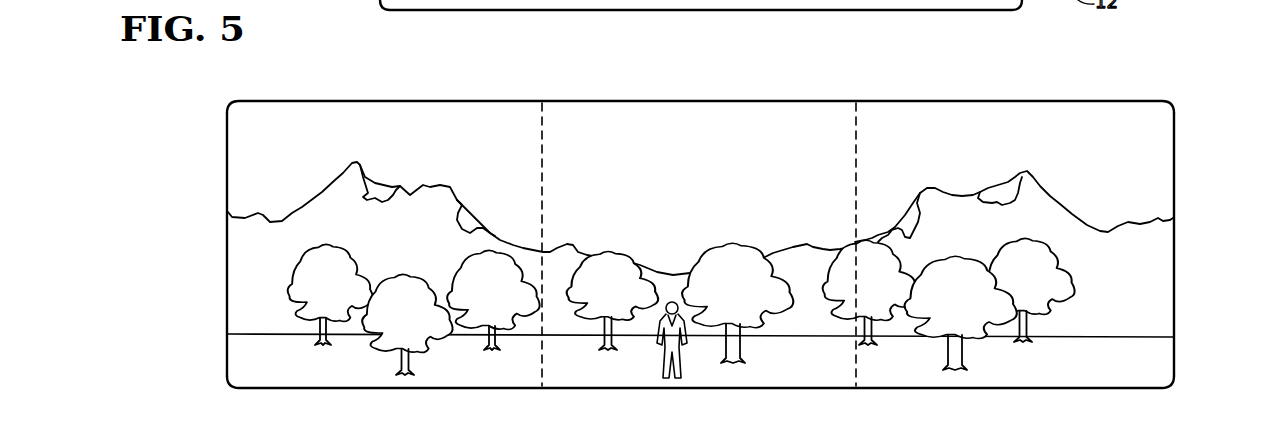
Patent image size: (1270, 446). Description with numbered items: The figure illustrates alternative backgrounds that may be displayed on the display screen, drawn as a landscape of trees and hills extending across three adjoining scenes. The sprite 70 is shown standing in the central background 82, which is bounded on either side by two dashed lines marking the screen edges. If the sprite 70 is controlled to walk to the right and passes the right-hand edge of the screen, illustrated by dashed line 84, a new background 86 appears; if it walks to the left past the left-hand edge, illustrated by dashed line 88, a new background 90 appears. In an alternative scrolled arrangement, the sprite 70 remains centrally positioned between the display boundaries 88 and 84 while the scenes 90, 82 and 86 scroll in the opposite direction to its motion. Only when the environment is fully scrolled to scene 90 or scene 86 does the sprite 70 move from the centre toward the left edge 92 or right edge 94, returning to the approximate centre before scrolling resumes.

The sprite 70 is at (673, 301).
The background 82 is at (733, 145).
The dashed line 84 is at (857, 149).
The new background 86 is at (1044, 145).
The dashed line 88 is at (543, 169).
The new background 90 is at (418, 145).
The left edge 92 is at (226, 183).
The right edge 94 is at (1175, 191).